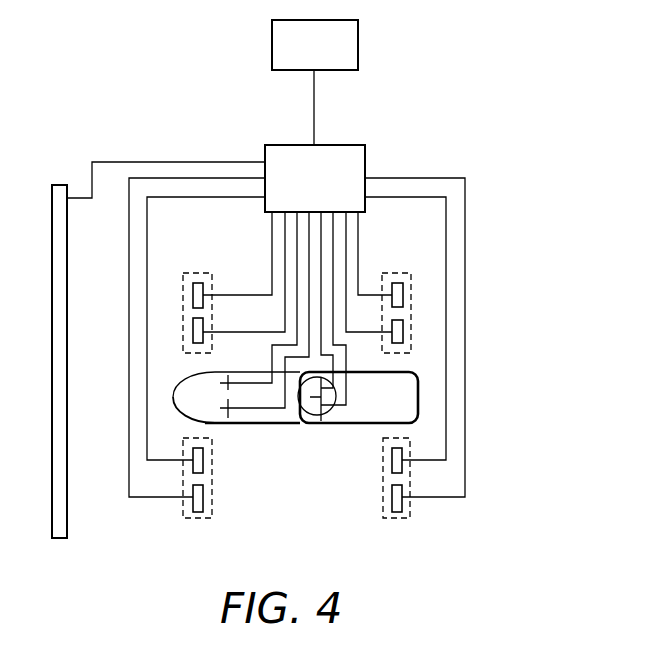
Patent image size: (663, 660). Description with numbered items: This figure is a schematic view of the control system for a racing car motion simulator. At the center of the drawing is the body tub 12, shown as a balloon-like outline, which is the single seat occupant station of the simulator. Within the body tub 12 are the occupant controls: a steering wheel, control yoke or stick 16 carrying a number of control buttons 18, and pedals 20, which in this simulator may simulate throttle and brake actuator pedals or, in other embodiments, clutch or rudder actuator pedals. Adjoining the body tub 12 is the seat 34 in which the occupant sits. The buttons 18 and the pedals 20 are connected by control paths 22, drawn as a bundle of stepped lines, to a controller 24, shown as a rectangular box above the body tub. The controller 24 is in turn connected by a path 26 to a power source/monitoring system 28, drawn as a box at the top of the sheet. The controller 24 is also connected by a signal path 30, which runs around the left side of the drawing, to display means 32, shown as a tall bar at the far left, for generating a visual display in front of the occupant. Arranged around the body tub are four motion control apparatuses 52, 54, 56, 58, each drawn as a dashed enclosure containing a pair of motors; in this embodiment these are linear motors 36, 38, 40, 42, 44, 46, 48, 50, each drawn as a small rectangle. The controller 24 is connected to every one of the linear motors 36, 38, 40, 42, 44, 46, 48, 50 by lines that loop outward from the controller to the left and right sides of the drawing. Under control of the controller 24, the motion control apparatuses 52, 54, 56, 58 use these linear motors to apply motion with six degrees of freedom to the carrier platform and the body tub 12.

The body tub 12 is at (185, 400).
The steering wheel, control yoke or stick 16 is at (303, 412).
The control buttons 18 is at (321, 423).
The pedals 20 is at (228, 374).
The control paths 22 is at (358, 240).
The controller 24 is at (278, 145).
The path 26 is at (314, 105).
The power source/monitoring system 28 is at (358, 28).
The signal path 30 is at (121, 161).
The display means 32 is at (67, 520).
The seat 34 is at (397, 395).
The linear motor 36 is at (203, 497).
The linear motor 38 is at (203, 460).
The linear motor 40 is at (193, 332).
The linear motor 42 is at (193, 297).
The linear motor 44 is at (403, 297).
The linear motor 46 is at (403, 332).
The linear motor 48 is at (392, 460).
The linear motor 50 is at (392, 497).
The motion control apparatus 52 is at (203, 520).
The motion control apparatus 54 is at (200, 272).
The motion control apparatus 56 is at (405, 272).
The motion control apparatus 58 is at (394, 522).